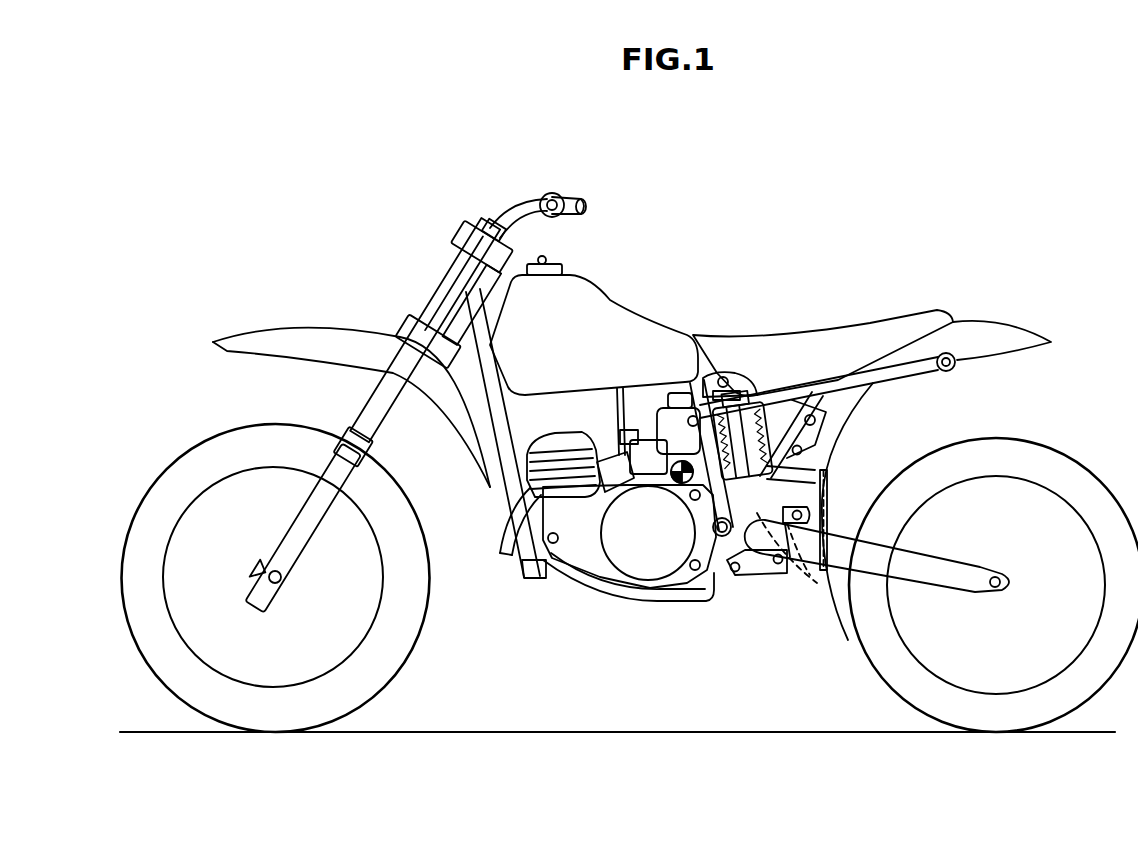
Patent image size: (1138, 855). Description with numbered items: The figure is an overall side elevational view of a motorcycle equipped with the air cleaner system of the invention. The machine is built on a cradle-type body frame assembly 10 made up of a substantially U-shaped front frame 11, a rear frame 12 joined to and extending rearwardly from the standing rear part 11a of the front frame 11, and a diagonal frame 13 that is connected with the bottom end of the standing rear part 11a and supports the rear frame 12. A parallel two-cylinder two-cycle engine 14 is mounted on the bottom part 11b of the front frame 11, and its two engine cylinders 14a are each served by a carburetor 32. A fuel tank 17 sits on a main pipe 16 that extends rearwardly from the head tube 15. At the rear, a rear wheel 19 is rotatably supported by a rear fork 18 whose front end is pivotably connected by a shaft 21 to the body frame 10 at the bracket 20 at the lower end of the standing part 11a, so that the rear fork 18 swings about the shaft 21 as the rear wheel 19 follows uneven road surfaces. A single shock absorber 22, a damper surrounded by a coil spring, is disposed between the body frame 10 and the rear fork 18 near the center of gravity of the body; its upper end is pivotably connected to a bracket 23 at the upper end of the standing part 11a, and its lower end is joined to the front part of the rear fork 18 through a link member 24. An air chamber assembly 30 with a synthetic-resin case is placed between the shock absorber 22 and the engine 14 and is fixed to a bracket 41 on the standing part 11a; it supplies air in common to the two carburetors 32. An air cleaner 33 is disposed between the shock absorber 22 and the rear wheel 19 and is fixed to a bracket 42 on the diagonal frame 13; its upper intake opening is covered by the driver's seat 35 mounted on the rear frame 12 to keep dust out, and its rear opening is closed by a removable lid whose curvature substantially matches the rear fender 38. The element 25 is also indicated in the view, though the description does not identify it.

The body frame assembly 10 is at (553, 592).
The front frame 11 is at (622, 599).
The standing rear part 11a is at (713, 376).
The bottom part 11b is at (657, 601).
The rear frame 12 is at (850, 378).
The diagonal frame 13 is at (805, 444).
The engine 14 is at (623, 562).
The engine cylinders 14a is at (553, 446).
The head tube 15 is at (462, 292).
The main pipe 16 is at (520, 263).
The fuel tank 17 is at (578, 292).
The rear fork 18 is at (873, 565).
The rear wheel 19 is at (1087, 690).
The bracket 20 is at (716, 578).
The shaft 21 is at (703, 583).
The shock absorber 22 is at (797, 501).
The bracket 23 is at (717, 373).
The link member 24 is at (817, 584).
The link 25 is at (810, 515).
The air chamber assembly 30 is at (662, 410).
The carburetors 32 is at (630, 448).
The air cleaner 33 is at (857, 392).
The driver's seat 35 is at (830, 334).
The rear fender 38 is at (1007, 333).
The bracket 41 is at (662, 415).
The bracket 42 is at (817, 419).